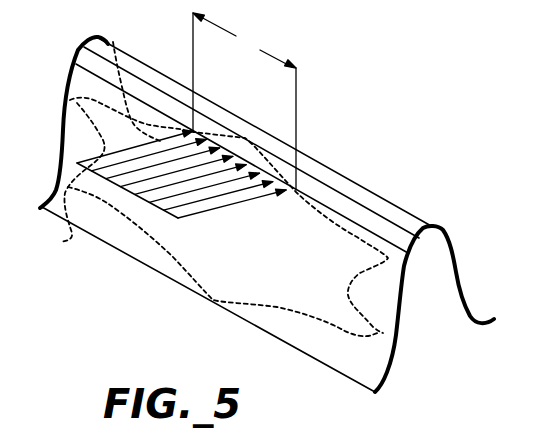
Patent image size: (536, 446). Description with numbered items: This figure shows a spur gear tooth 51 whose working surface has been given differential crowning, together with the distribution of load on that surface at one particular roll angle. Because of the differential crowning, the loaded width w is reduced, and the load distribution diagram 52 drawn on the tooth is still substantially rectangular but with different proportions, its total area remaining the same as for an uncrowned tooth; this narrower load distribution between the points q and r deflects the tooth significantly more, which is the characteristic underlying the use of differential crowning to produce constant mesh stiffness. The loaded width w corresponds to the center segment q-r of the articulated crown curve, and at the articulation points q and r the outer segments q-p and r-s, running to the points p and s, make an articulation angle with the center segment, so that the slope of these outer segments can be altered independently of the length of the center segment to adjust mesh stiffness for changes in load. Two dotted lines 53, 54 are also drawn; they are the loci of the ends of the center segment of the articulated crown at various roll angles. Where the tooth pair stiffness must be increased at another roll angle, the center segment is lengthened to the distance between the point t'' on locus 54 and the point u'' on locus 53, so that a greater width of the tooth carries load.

The tooth 51 is at (395, 362).
The load distribution diagram 52 is at (208, 208).
The dotted line (locus) 53 is at (383, 332).
The dotted line (locus) 54 is at (68, 178).
The loaded width w is at (244, 101).
The point q is at (193, 130).
The point r is at (296, 188).
The point p is at (75, 65).
The point s is at (413, 257).
The point t'' is at (50, 86).
The point u'' is at (429, 295).